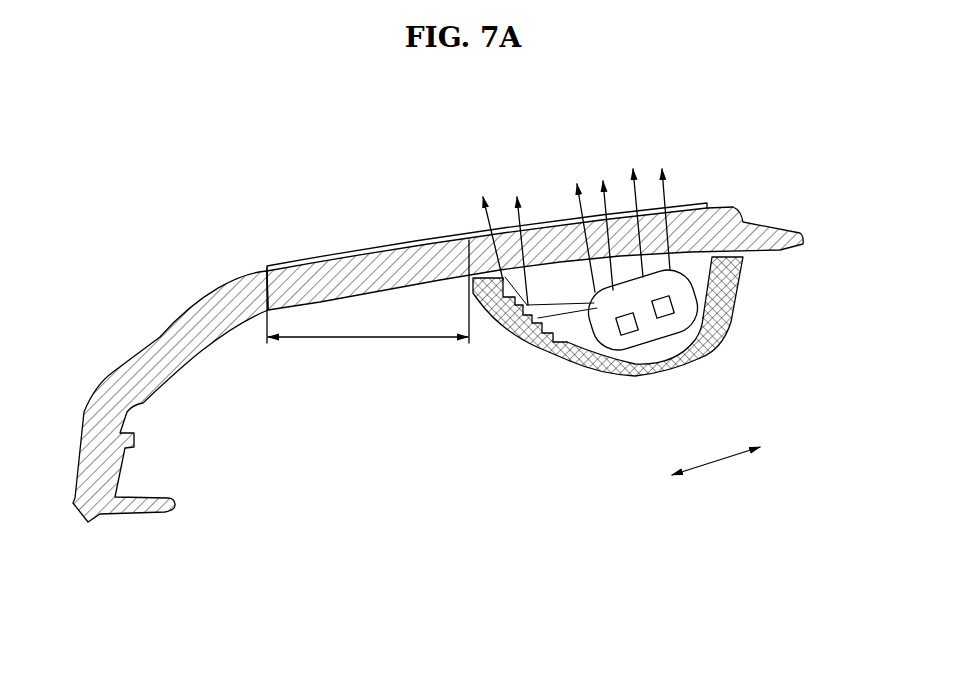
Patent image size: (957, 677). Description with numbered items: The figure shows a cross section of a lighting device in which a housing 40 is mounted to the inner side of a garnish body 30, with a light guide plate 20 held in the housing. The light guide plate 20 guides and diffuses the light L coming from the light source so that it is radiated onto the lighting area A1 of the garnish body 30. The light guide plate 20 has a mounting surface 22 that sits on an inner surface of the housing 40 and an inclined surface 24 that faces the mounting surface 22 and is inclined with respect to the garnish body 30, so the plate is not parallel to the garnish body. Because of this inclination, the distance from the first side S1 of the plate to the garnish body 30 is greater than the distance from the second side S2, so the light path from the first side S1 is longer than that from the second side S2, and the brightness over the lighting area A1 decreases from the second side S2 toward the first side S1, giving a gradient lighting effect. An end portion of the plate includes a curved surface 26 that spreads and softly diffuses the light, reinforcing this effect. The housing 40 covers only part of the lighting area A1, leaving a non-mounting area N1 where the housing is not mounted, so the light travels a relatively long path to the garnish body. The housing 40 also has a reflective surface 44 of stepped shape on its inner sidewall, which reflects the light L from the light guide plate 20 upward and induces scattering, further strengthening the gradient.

The light guide plate 20 is at (698, 271).
The mounting surface 22 is at (703, 355).
The inclined surface 24 is at (638, 283).
The curved surface 26 is at (572, 360).
The garnish body 30 is at (175, 343).
The housing 40 is at (496, 315).
The reflective surface 44 is at (537, 343).
The lighting area A1 is at (296, 262).
The non-mounting area N1 is at (368, 303).
The light L is at (630, 430).
The first side S1 is at (700, 467).
The second side S2 is at (777, 448).